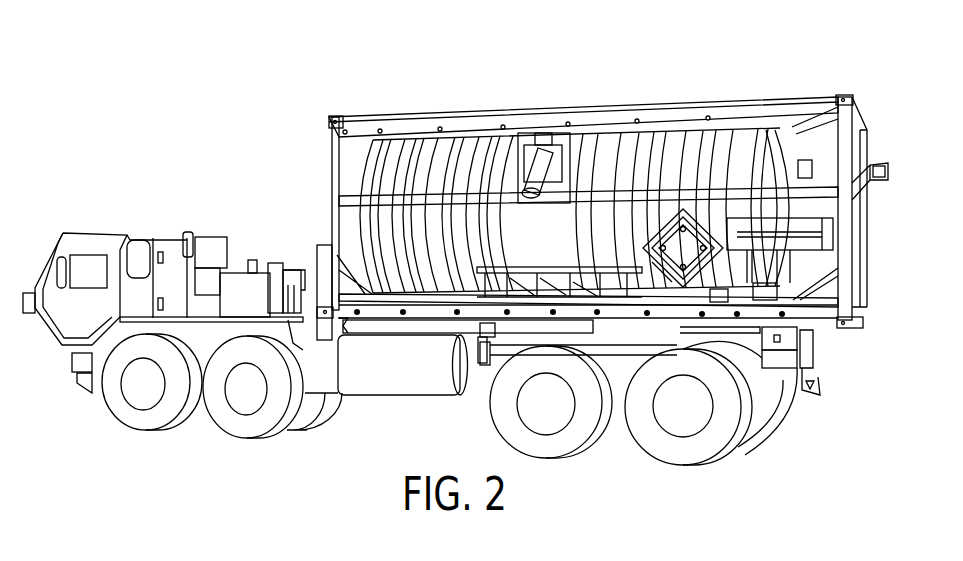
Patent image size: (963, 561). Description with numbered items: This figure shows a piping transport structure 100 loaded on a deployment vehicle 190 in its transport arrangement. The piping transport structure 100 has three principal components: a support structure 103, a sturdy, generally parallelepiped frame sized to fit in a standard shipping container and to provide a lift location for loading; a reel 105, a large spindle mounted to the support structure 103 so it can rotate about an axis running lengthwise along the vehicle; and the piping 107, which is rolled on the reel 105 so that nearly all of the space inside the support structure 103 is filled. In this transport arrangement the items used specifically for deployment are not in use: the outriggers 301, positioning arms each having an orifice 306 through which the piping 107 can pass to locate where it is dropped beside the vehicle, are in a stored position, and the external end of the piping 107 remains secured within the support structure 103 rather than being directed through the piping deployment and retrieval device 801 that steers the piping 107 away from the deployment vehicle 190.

The piping transport structure 100 is at (525, 76).
The support structure 103 is at (707, 103).
The reel 105 is at (378, 152).
The piping 107 is at (617, 140).
The deployment vehicle 190 is at (97, 233).
The outrigger 301 is at (703, 258).
The orifice 306 is at (670, 272).
The piping deployment and retrieval device 801 is at (556, 140).